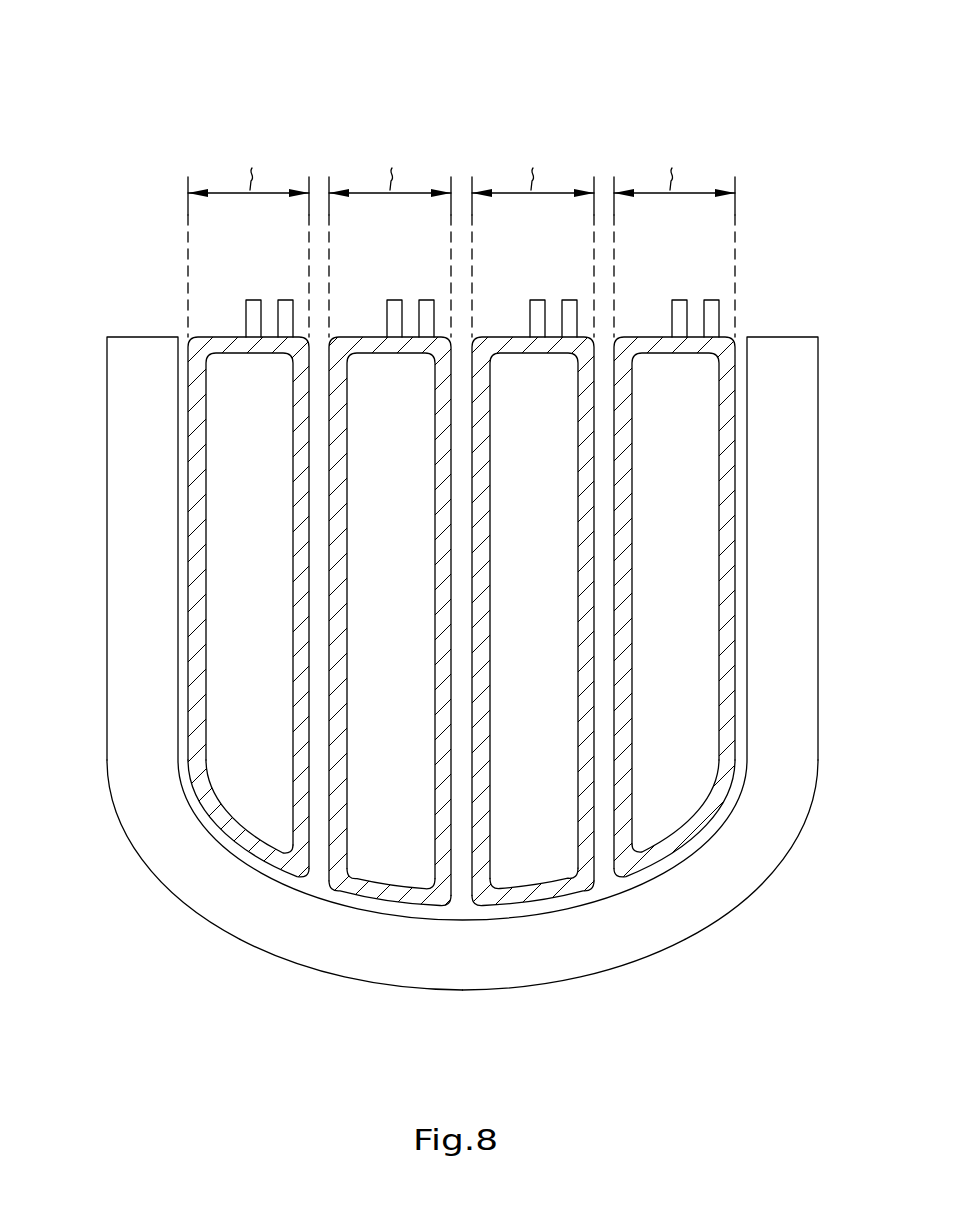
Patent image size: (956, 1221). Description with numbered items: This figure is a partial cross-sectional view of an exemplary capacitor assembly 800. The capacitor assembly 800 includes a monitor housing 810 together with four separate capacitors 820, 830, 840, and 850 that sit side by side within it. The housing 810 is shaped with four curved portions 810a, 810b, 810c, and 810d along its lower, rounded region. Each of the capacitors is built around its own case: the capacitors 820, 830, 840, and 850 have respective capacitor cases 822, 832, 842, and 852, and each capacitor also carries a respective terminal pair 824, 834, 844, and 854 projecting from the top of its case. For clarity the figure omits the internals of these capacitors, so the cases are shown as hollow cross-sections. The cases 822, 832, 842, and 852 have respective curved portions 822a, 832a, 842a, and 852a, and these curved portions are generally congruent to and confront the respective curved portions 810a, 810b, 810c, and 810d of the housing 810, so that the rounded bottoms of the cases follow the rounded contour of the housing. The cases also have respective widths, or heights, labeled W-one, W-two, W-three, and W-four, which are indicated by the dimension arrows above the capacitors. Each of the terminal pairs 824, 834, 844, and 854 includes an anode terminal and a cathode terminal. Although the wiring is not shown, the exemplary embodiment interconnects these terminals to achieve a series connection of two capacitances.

The capacitor assembly 800 is at (150, 40).
The monitor housing 810 is at (803, 422).
The curved portion 810a is at (203, 888).
The curved portion 810b is at (396, 957).
The curved portion 810c is at (531, 957).
The curved portion 810d is at (725, 883).
The capacitor 820 is at (272, 618).
The capacitor case 822 is at (192, 470).
The curved portion 822a is at (215, 788).
The terminal pair 824 is at (270, 280).
The capacitor 830 is at (414, 618).
The capacitor case 832 is at (333, 470).
The curved portion 832a is at (386, 882).
The terminal pair 834 is at (415, 280).
The capacitor 840 is at (554, 618).
The capacitor case 842 is at (476, 470).
The curved portion 842a is at (536, 880).
The terminal pair 844 is at (557, 280).
The capacitor 850 is at (694, 618).
The capacitor case 852 is at (617, 470).
The curved portion 852a is at (713, 782).
The terminal pair 854 is at (697, 280).